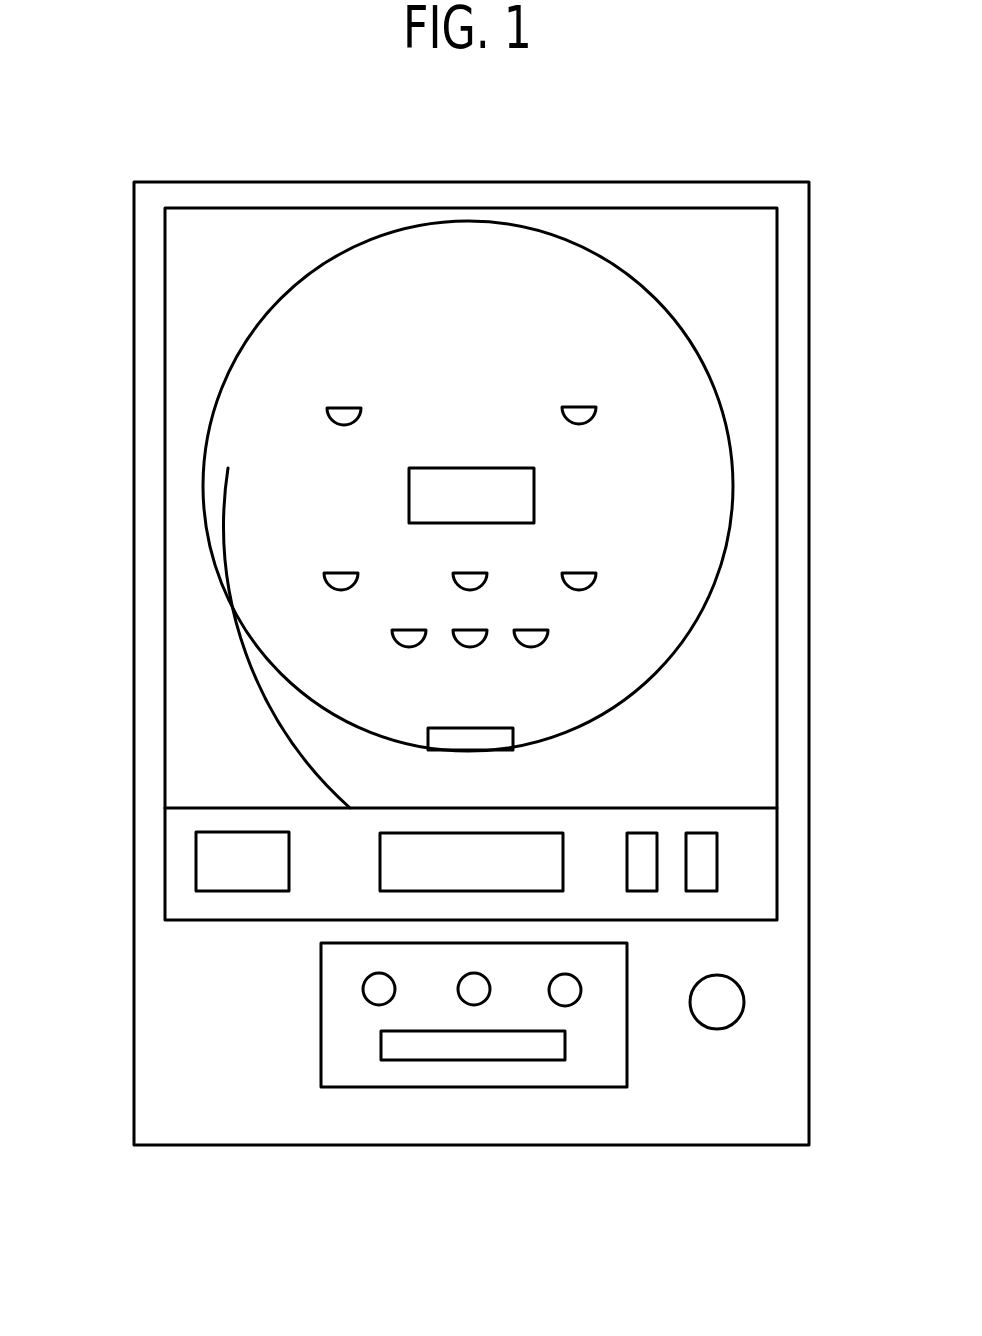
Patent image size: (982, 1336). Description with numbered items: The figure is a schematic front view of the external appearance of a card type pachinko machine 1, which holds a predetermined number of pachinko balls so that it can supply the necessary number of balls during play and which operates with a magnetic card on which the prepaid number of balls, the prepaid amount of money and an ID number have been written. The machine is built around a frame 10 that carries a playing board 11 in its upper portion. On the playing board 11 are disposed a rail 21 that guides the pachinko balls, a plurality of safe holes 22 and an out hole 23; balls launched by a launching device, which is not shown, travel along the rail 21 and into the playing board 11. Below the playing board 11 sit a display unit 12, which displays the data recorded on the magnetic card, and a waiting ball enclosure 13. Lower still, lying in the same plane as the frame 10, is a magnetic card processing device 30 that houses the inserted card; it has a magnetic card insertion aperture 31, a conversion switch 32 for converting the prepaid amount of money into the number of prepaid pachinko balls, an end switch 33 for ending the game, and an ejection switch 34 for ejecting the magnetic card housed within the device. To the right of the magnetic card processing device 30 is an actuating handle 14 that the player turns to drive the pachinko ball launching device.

The card type pachinko machine 1 is at (790, 155).
The frame 10 is at (792, 517).
The playing board 11 is at (660, 633).
The display unit 12 is at (210, 865).
The waiting ball enclosure 13 is at (398, 855).
The actuating handle 14 is at (720, 1016).
The rail 21 is at (250, 677).
The safe holes 22 is at (348, 408).
The out hole 23 is at (493, 745).
The magnetic card processing device 30 is at (570, 1078).
The magnetic card insertion aperture 31 is at (417, 1050).
The conversion switch 32 is at (372, 990).
The end switch 33 is at (470, 993).
The button 34 is at (572, 992).